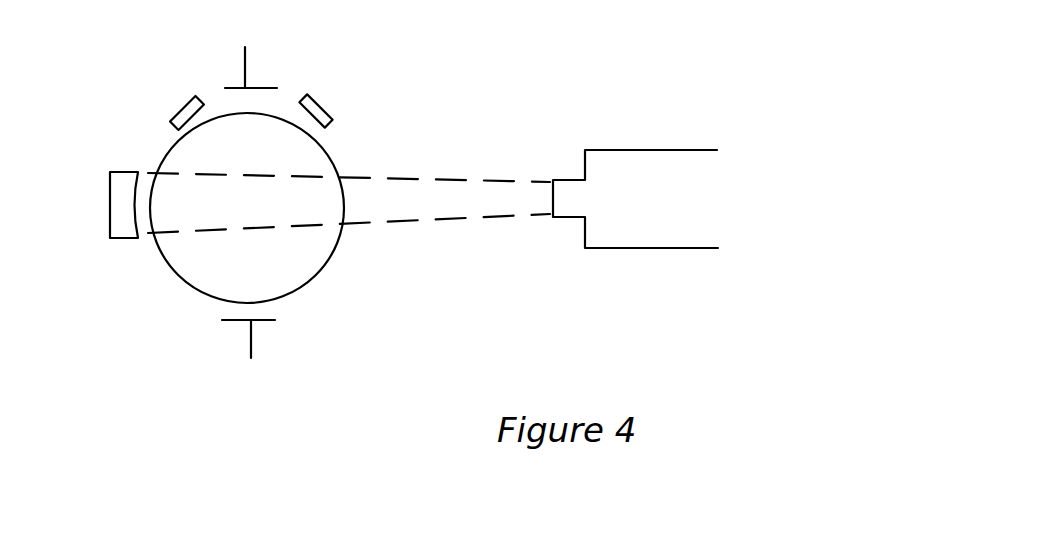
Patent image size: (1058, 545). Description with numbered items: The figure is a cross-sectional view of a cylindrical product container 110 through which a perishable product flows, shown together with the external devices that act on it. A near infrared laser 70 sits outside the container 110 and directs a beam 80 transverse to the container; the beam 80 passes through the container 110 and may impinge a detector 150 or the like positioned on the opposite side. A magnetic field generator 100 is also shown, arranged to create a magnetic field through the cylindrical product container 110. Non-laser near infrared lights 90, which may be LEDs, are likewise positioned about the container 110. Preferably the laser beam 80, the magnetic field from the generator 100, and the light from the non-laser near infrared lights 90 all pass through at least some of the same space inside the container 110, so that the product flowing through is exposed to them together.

The near infrared laser 70 is at (628, 178).
The beam 80 is at (407, 176).
The non laser near infrared lights 90 is at (188, 108).
The magnetic field generator 100 is at (247, 66).
The cylindrical product container 110 is at (323, 268).
The detector 150 is at (118, 208).